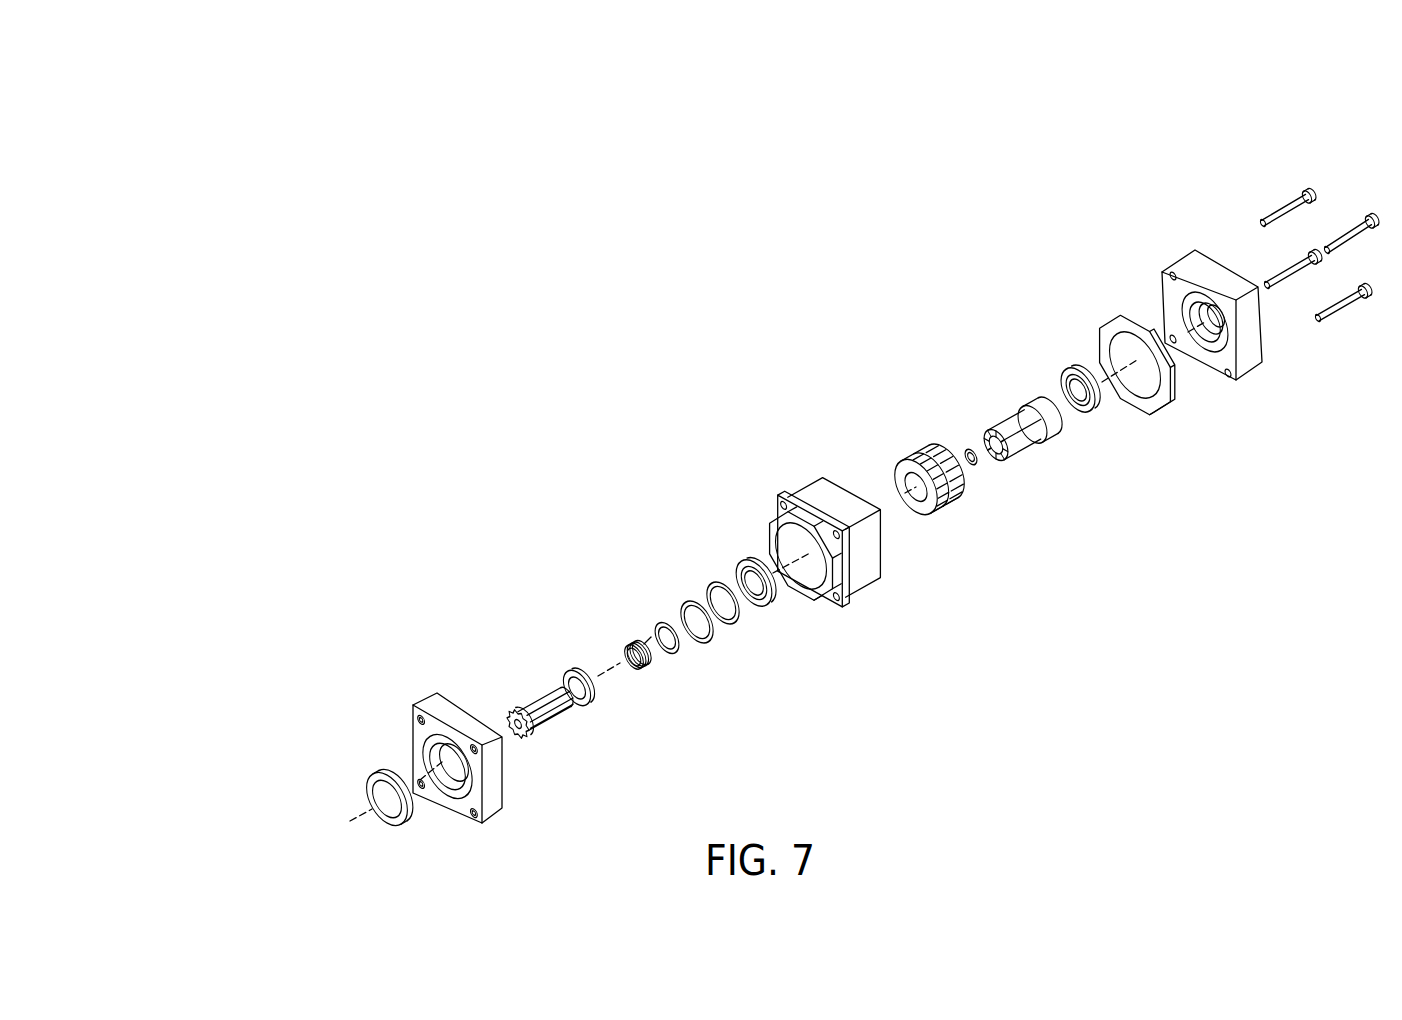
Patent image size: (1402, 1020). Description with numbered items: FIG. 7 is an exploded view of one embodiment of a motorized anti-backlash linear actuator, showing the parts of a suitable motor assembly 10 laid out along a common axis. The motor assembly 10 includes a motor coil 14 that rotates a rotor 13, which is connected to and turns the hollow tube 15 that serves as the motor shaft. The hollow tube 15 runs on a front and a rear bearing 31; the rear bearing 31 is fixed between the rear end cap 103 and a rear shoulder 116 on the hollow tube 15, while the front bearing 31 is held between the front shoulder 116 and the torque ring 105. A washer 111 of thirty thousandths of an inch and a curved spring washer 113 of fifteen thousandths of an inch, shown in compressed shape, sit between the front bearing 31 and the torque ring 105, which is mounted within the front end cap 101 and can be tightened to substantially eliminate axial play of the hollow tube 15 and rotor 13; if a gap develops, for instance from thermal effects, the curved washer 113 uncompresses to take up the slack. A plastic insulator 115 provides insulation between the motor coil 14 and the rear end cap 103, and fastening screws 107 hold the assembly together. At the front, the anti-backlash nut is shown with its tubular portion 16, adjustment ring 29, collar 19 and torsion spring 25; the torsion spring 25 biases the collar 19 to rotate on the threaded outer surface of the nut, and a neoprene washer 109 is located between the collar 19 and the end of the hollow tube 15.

The motor assembly 10 is at (282, 188).
The fastening screws 107 is at (1267, 203).
The rear end cap 103 is at (1170, 258).
The plastic insulator 115 is at (1107, 308).
The bearings 31 is at (1065, 365).
The hollow tube 15 is at (998, 412).
The rotor 13 is at (910, 448).
The motor coil 14 is at (793, 478).
The washer 111 is at (708, 577).
The curved washer 113 is at (678, 593).
The collar 19 is at (653, 615).
The torsion spring 25 is at (625, 637).
The adjustment ring 29 is at (570, 665).
The tubular portion 16 is at (523, 702).
The front end cap 101 is at (416, 697).
The torque ring 105 is at (368, 774).
The shoulder 116 is at (1000, 463).
The neoprene washer 109 is at (975, 479).